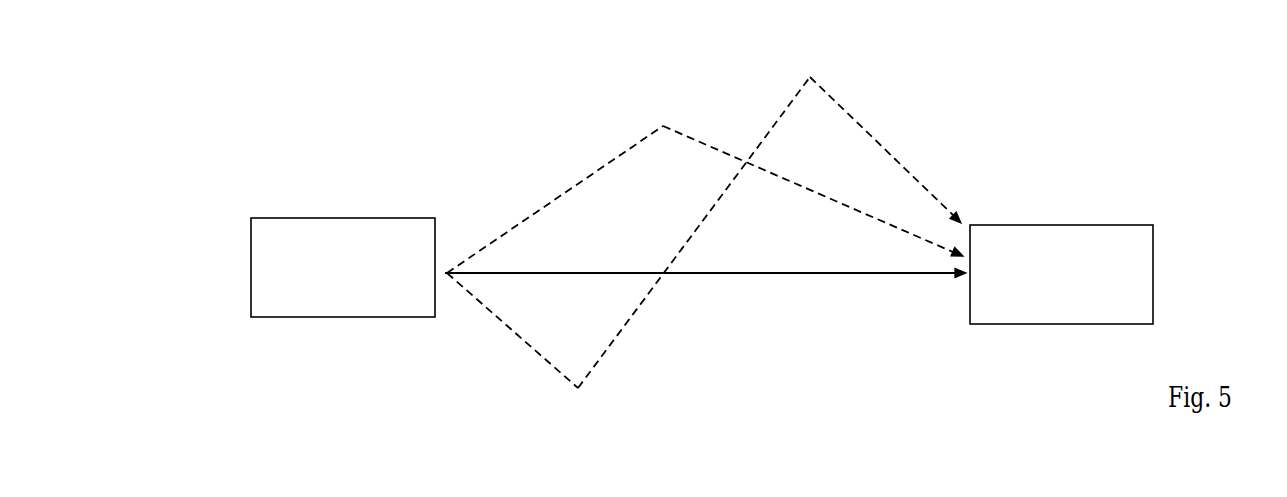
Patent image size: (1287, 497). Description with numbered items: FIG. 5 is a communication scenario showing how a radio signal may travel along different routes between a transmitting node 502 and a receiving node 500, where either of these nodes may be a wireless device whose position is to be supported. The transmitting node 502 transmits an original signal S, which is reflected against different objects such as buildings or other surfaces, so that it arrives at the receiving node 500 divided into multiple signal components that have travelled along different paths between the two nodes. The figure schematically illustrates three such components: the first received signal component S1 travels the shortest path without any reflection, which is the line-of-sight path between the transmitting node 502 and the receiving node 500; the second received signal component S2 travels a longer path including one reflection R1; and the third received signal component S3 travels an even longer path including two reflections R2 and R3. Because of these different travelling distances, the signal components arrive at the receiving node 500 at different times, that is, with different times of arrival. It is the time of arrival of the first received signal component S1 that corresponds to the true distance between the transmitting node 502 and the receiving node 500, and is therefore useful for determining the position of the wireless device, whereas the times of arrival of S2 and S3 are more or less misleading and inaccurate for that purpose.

The receiving node 500 is at (1037, 225).
The transmitting node 502 is at (302, 218).
The original signal S is at (451, 240).
The first received signal component S1 is at (898, 278).
The second received signal component S2 is at (862, 217).
The third received signal component S3 is at (907, 173).
The reflection R1 is at (660, 113).
The reflection R2 is at (582, 401).
The reflection R3 is at (814, 66).